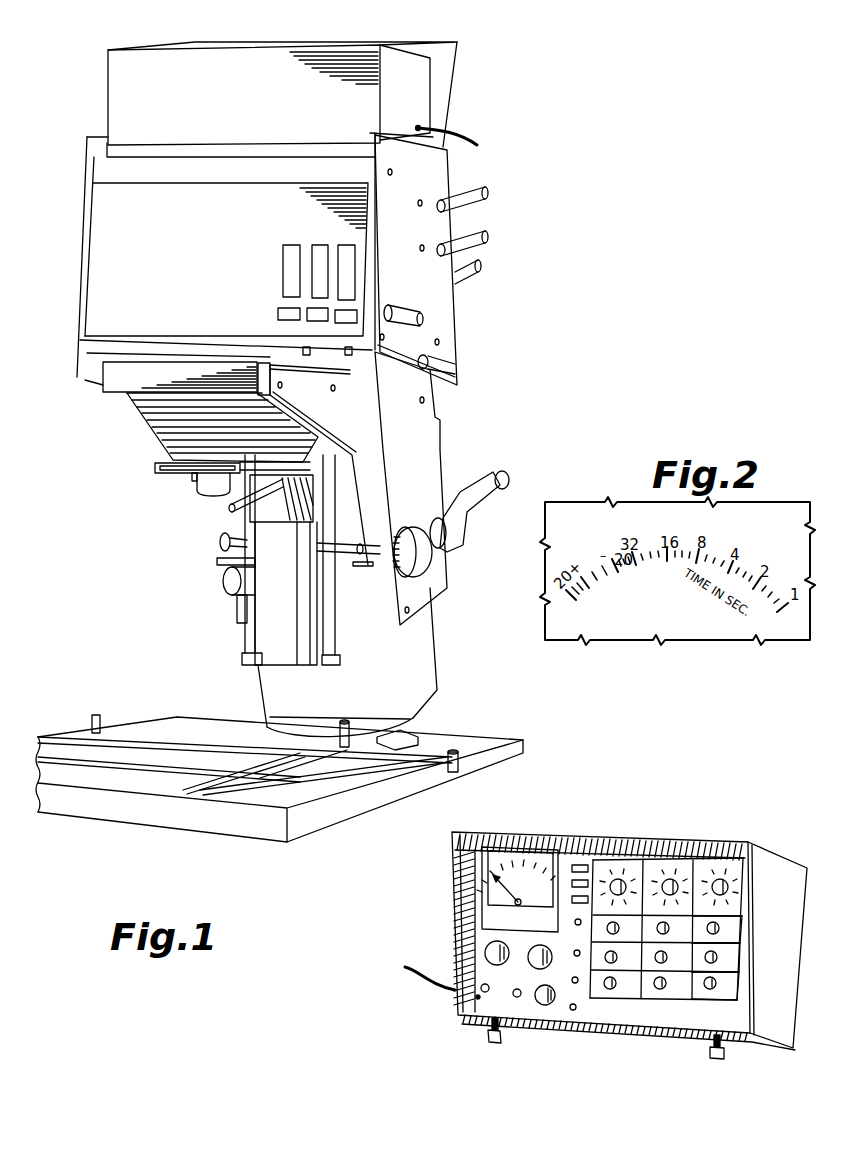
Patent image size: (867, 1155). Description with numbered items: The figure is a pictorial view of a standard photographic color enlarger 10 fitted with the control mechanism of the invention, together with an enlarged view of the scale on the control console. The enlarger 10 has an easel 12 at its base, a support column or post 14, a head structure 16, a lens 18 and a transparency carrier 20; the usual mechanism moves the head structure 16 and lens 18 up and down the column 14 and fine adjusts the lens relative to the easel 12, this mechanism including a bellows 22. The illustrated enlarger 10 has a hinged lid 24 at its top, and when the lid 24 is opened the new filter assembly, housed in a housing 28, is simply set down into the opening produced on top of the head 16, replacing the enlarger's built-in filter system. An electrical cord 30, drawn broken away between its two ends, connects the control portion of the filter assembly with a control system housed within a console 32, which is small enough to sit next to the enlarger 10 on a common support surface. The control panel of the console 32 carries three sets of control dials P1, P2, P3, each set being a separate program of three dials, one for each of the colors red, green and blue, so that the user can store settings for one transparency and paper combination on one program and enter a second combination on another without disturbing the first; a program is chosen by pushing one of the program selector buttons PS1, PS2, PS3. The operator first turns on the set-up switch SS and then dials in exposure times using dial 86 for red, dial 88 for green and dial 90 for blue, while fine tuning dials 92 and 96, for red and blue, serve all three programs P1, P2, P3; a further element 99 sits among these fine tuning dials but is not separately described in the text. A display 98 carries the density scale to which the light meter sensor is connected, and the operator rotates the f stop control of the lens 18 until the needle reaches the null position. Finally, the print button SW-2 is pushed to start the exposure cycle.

The color enlarger 10 is at (462, 405).
The easel 12 is at (85, 805).
The support column 14 is at (413, 653).
The head structure 16 is at (432, 297).
The lens 18 is at (197, 482).
The transparency carrier 20 is at (117, 377).
The bellows 22 is at (160, 430).
The hinged lid 24 is at (440, 95).
The housing 28 is at (147, 56).
The electrical cord 30 is at (477, 144).
The console 32 is at (547, 1047).
The dial 86 is at (605, 935).
The dial 88 is at (655, 940).
The dial 90 is at (705, 940).
The fine tuning dial 92 is at (628, 867).
The fine tuning dial 96 is at (733, 870).
The display 98 is at (493, 910).
The second potentiometer knob 99 is at (676, 868).
The set of control dials P1 is at (735, 933).
The set of control dials P2 is at (737, 962).
The set of control dials P3 is at (737, 990).
The program selector button PS1 is at (591, 872).
The program selector button PS2 is at (592, 886).
The program selector button PS3 is at (586, 868).
The set-up switch SS is at (478, 1000).
The print button SW-2 is at (515, 1000).